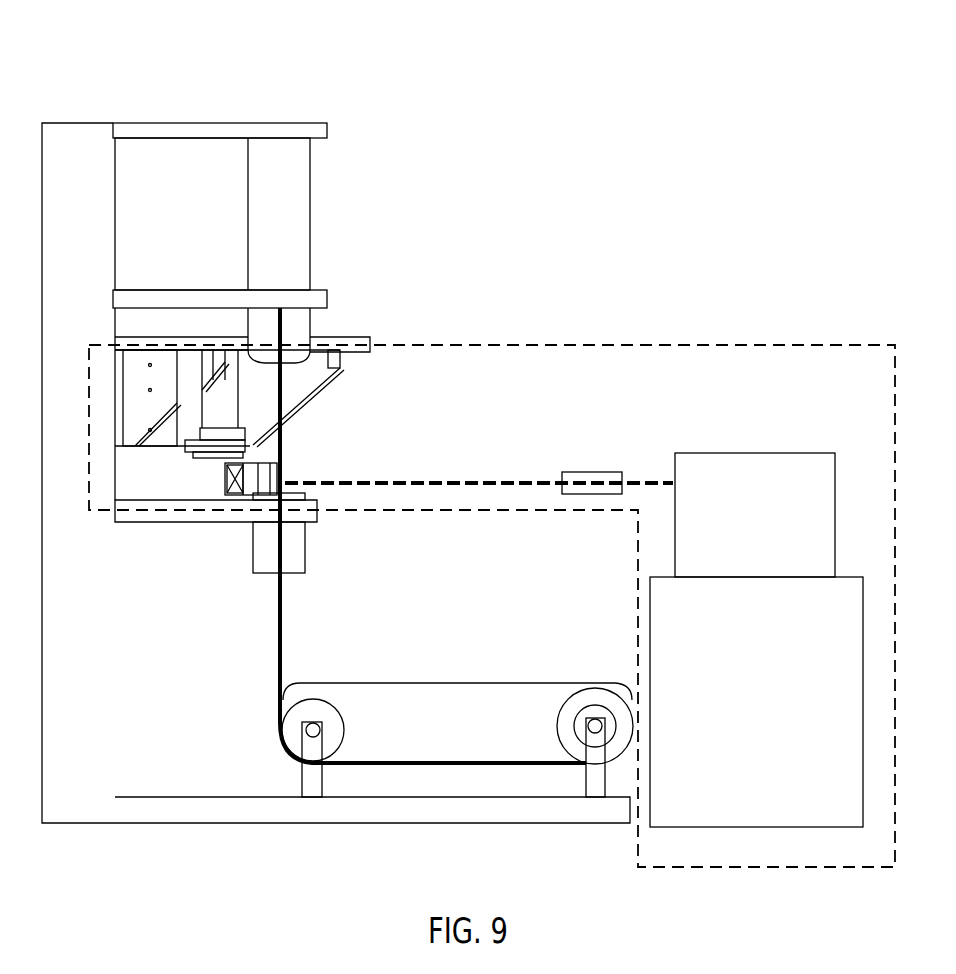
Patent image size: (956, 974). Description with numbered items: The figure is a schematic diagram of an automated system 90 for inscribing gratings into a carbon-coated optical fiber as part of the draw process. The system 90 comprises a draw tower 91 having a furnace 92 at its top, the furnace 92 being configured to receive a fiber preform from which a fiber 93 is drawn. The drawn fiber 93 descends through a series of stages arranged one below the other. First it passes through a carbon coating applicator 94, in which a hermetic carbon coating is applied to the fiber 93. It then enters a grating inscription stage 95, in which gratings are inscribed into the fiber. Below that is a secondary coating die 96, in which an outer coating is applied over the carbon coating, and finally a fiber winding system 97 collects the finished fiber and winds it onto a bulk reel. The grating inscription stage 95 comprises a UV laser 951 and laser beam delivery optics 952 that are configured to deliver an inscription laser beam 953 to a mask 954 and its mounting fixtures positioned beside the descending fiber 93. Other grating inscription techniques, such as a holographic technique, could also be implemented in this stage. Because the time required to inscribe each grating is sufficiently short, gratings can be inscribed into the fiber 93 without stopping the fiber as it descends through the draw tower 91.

The automated system 90 is at (461, 65).
The draw tower 91 is at (193, 110).
The furnace 92 is at (265, 227).
The fiber 93 is at (282, 435).
The carbon coating applicator 94 is at (305, 323).
The grating inscription stage 95 is at (857, 384).
The secondary coating die 96 is at (297, 549).
The fiber winding system 97 is at (446, 683).
The UV laser 951 is at (740, 539).
The laser beam delivery optics 952 is at (576, 465).
The inscription laser beam 953 is at (424, 470).
The mask 954 is at (284, 473).